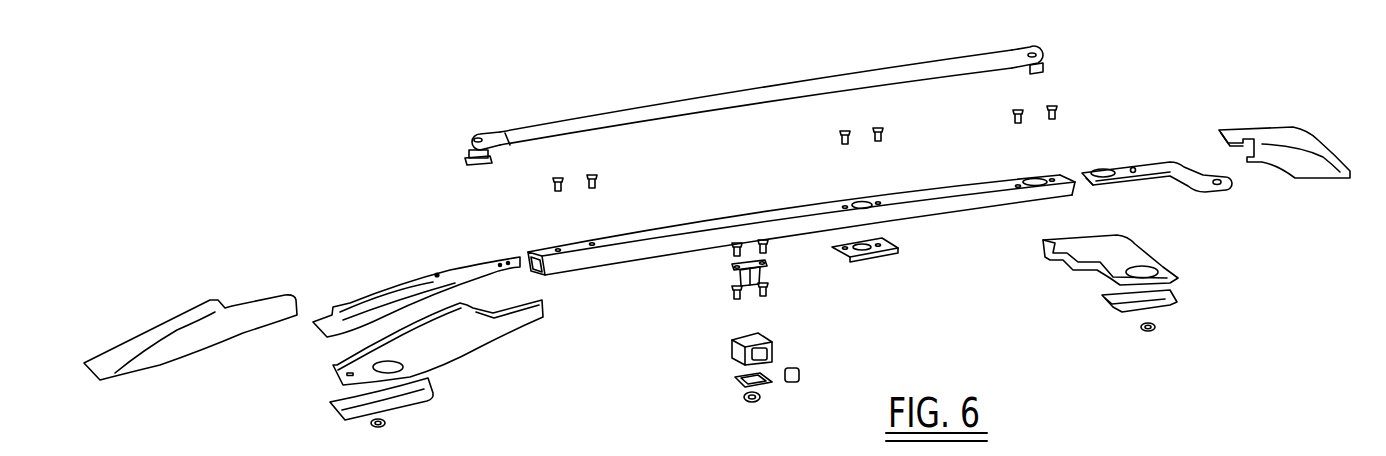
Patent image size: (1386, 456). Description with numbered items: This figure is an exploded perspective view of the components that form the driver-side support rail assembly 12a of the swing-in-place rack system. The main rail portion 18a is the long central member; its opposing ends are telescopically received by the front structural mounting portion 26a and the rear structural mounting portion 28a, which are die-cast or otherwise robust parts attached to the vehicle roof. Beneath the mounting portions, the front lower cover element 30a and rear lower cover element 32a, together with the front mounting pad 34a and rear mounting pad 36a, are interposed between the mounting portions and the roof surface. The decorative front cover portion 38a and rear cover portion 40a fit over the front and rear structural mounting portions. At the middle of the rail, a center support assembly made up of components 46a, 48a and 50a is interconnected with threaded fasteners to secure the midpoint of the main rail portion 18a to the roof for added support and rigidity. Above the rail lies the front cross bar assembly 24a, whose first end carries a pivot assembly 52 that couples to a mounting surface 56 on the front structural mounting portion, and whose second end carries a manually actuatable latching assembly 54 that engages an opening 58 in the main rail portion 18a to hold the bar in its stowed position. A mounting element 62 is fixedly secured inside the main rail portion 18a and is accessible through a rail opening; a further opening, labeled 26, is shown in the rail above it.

The support rail assembly 12a is at (280, 148).
The main rail portion 18a is at (925, 198).
The front cross bar assembly 24a is at (636, 104).
The aperture 26 is at (850, 203).
The front structural mounting portion 26a is at (367, 298).
The rear structural mounting portion 28a is at (1127, 168).
The front lower cover element 30a is at (333, 365).
The rear lower cover element 32a is at (1130, 252).
The front mounting pad 34a is at (417, 387).
The rear mounting pad 36a is at (1152, 300).
The front cover portion 38a is at (185, 316).
The rear cover portion 40a is at (1301, 137).
The center support assembly component 46a is at (733, 278).
The center support assembly component 48a is at (772, 347).
The center support assembly component 50a is at (740, 380).
The pivot assembly 52 is at (470, 138).
The latching assembly 54 is at (1018, 55).
The mounting surface 56 is at (437, 274).
The opening 58 is at (1030, 177).
The mounting element 62 is at (893, 255).